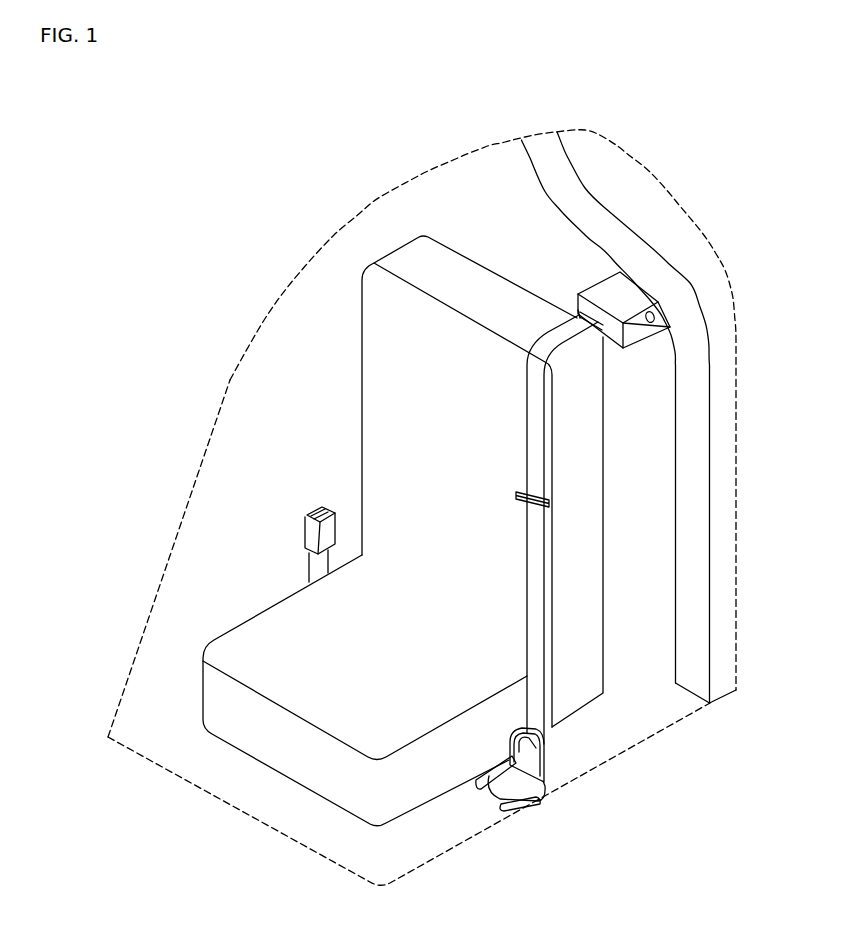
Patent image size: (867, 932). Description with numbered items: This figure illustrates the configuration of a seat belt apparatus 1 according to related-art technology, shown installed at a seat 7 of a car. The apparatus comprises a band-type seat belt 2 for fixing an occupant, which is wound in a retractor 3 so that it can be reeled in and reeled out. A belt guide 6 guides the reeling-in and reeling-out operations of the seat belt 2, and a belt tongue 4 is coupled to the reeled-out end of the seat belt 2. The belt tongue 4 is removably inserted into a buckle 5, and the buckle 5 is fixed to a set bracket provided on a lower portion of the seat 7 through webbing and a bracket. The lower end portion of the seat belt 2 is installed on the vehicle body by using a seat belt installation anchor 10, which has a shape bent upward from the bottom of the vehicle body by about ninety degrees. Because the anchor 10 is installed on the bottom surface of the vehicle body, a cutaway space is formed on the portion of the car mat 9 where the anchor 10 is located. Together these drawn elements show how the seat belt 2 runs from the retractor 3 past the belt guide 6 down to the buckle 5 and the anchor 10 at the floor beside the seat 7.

The seat belt apparatus 1 is at (574, 447).
The seat belt 2 is at (533, 567).
The retractor 3 is at (637, 287).
The belt tongue 4 is at (548, 503).
The buckle 5 is at (300, 523).
The belt guide 6 is at (672, 338).
The seat 7 is at (257, 629).
The car mat 9 is at (455, 838).
The seat belt installation anchor 10 is at (552, 770).